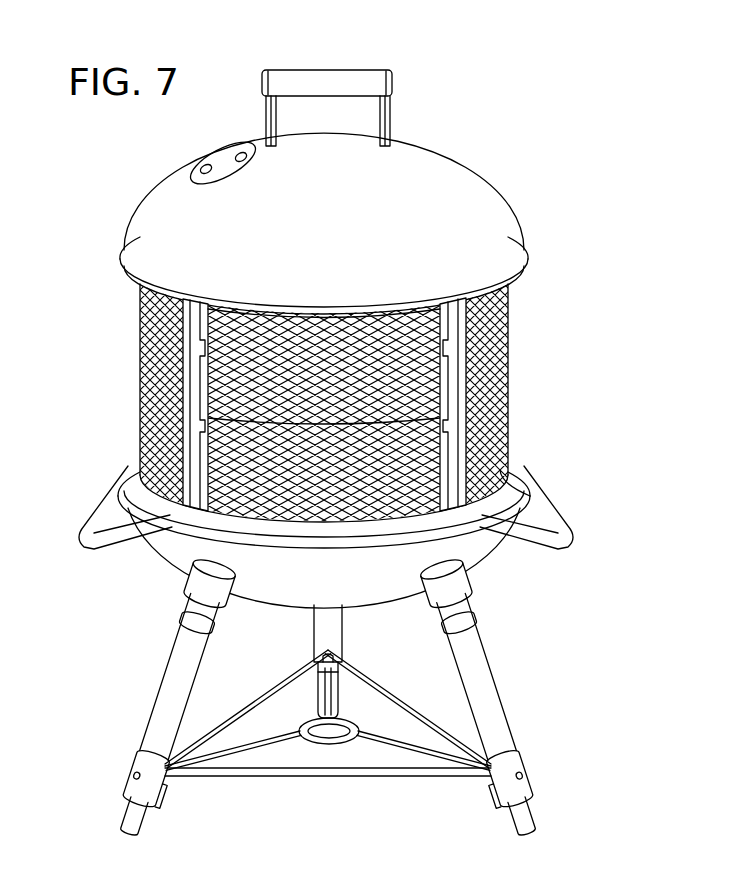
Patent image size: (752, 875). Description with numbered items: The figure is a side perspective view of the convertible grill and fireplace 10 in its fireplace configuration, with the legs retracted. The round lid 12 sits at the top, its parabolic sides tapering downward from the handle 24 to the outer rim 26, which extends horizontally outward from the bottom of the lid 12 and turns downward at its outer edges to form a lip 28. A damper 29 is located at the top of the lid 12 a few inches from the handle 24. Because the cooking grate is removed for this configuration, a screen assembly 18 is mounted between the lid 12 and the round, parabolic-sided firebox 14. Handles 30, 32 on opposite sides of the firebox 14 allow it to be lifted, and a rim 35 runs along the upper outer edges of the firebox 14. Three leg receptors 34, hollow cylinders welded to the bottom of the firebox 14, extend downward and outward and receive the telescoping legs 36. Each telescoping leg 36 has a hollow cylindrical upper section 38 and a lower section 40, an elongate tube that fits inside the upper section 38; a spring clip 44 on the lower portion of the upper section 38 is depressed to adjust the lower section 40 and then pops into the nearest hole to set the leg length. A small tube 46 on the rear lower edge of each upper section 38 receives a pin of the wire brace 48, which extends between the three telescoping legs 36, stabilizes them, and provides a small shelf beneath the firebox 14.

The convertible grill and fireplace 10 is at (526, 388).
The lid 12 is at (455, 170).
The firebox 14 is at (172, 548).
The screen assembly 18 is at (120, 340).
The handle 24 is at (328, 72).
The outer rim 26 is at (520, 240).
The lip 28 is at (532, 268).
The damper 29 is at (220, 158).
The handle 30 is at (92, 522).
The handle 32 is at (558, 535).
The leg receptor 34 is at (190, 600).
The rim 35 is at (512, 470).
The telescoping leg 36 is at (138, 722).
The upper section 38 is at (172, 672).
The lower section 40 is at (126, 813).
The spring clip 44 is at (148, 762).
The small tube 46 is at (165, 792).
The wire brace 48 is at (336, 776).